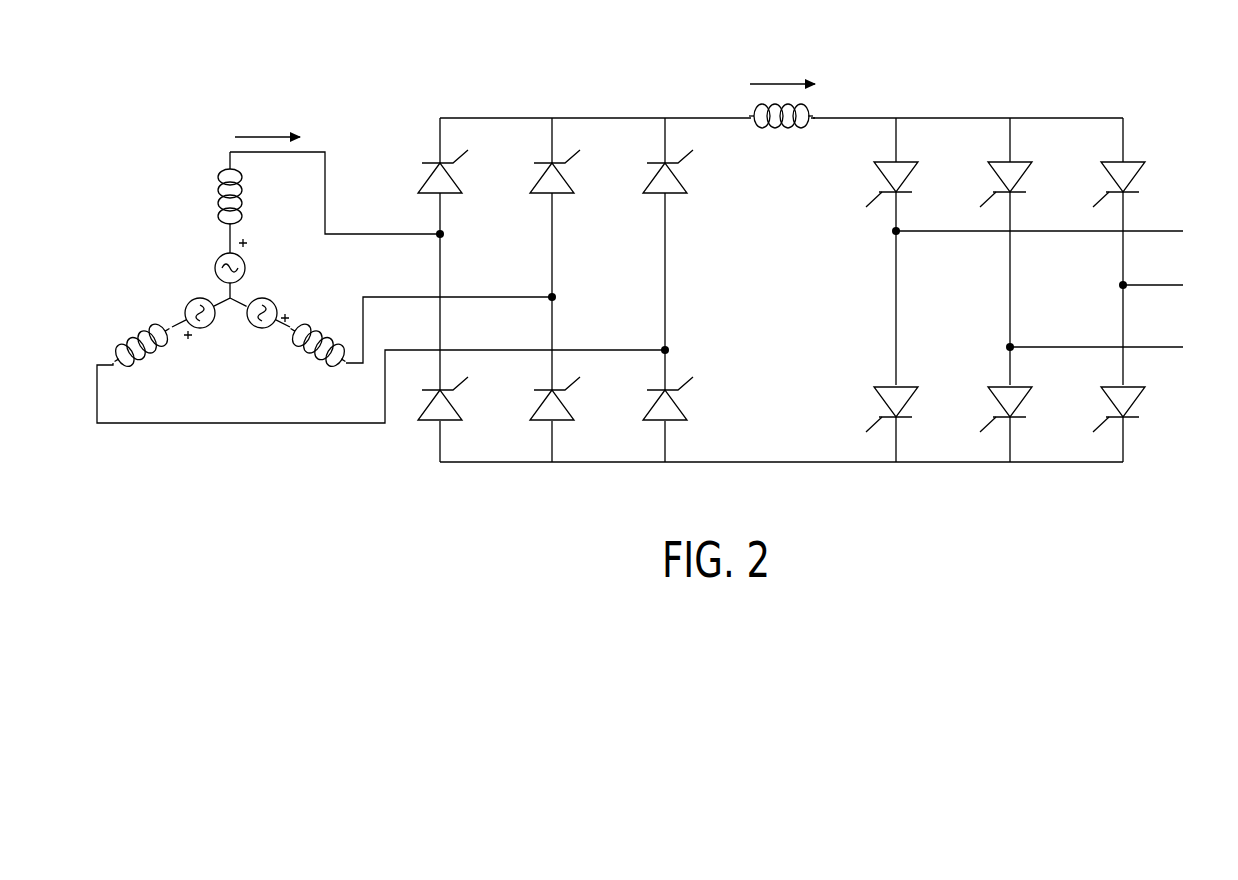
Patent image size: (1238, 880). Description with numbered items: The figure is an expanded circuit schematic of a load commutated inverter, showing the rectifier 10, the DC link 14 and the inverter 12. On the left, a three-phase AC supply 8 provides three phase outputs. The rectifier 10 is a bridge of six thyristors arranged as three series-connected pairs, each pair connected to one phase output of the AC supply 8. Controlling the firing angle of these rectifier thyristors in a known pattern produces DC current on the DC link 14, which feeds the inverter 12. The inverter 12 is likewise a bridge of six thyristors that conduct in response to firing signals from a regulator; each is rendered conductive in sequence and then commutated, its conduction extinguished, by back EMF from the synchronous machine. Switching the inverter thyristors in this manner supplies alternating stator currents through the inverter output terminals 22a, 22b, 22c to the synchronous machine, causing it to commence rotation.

The AC supply 8 is at (199, 346).
The rectifier 10 is at (549, 478).
The inverter 12 is at (1006, 478).
The DC link 14 is at (777, 147).
The inverter output terminal 22a is at (1173, 230).
The inverter output terminal 22b is at (1170, 347).
The inverter output terminal 22c is at (1169, 285).